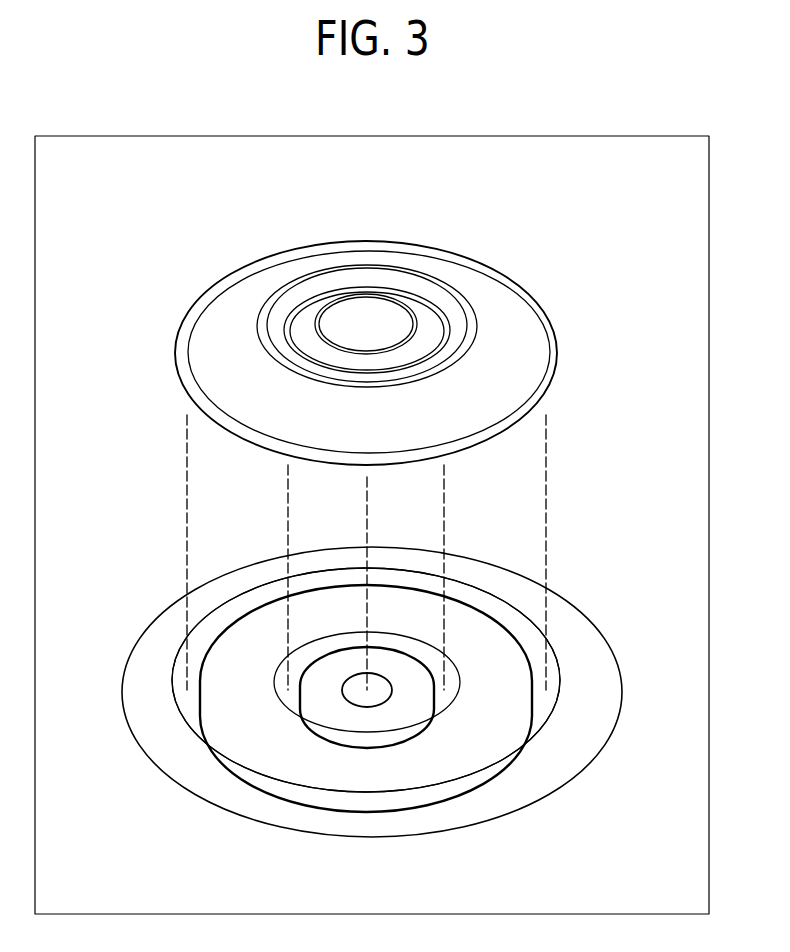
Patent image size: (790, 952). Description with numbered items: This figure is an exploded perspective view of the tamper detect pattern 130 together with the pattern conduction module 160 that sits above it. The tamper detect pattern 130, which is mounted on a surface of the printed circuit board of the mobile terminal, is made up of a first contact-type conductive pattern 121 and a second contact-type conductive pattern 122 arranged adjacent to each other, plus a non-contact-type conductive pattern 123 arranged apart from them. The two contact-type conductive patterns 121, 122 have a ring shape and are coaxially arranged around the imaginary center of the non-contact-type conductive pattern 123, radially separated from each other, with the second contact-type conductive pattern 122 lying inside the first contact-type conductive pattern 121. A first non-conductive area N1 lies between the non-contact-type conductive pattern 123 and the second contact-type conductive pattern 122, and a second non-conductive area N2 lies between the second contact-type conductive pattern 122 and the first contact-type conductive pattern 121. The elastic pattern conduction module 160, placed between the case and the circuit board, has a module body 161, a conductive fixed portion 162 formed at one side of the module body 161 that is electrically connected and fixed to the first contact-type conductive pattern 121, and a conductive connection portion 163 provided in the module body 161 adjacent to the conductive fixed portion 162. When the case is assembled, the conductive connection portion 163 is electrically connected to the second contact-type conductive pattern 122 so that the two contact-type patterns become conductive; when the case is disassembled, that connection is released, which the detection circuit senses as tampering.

The tamper detect pattern 130 is at (598, 770).
The first contact-type conductive pattern 121 is at (442, 792).
The second contact-type conductive pattern 122 is at (357, 740).
The non-contact-type conductive pattern 123 is at (355, 689).
The first non-conductive area N1 is at (518, 603).
The second non-conductive area N2 is at (518, 680).
The pattern conduction module 160 is at (373, 328).
The module body 161 is at (227, 340).
The conductive fixed portion 162 is at (552, 358).
The conductive connection portion 163 is at (440, 327).